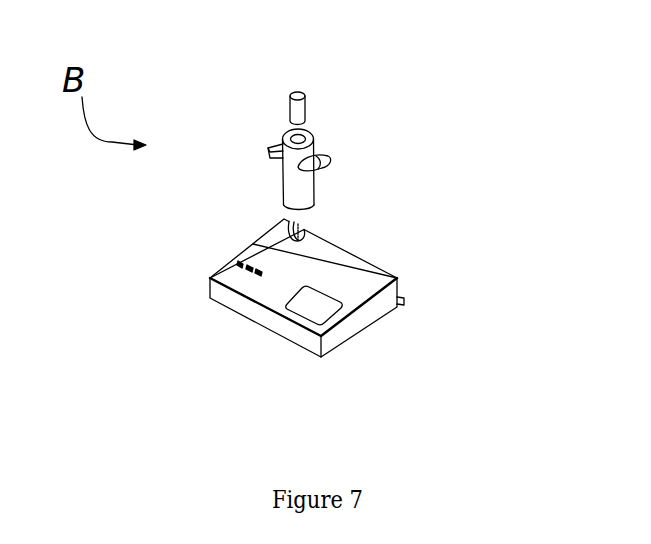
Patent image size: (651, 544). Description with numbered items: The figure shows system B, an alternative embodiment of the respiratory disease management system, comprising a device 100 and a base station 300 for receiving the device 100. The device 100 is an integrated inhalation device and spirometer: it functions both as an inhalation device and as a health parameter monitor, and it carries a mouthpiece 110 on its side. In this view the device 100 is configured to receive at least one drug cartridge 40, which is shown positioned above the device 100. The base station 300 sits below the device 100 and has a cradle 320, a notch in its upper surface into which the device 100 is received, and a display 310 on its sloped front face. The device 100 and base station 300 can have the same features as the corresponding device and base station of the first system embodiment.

The drug cartridge 40 is at (306, 101).
The device 100 is at (322, 141).
The mouthpiece of device 110 is at (325, 165).
The base station 300 is at (405, 301).
The display 310 is at (315, 311).
The cradle 320 is at (305, 236).